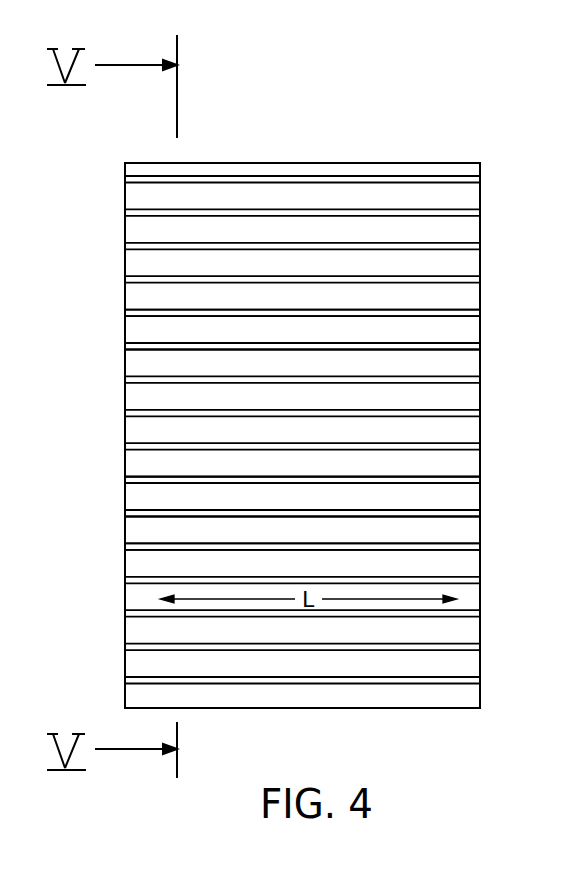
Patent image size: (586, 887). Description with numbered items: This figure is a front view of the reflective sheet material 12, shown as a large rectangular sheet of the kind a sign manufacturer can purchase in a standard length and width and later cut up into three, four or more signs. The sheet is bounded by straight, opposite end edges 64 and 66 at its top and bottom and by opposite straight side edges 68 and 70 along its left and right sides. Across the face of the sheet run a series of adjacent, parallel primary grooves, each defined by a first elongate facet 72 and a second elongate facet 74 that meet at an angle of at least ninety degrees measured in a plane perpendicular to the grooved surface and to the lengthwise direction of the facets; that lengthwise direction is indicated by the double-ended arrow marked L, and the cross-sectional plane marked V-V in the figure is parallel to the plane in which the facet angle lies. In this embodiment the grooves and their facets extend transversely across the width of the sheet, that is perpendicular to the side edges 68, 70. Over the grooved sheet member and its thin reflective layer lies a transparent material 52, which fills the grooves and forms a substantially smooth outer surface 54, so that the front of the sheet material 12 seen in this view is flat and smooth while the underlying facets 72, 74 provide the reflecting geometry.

The reflective sheet material 12 is at (285, 138).
The transparent material 52 is at (162, 330).
The smooth outer surface 54 is at (160, 535).
The end edge 64 is at (380, 163).
The end edge 66 is at (383, 708).
The side edge 68 is at (125, 440).
The side edge 70 is at (480, 447).
The first elongate facet 72 is at (155, 493).
The second elongate facet 74 is at (443, 482).